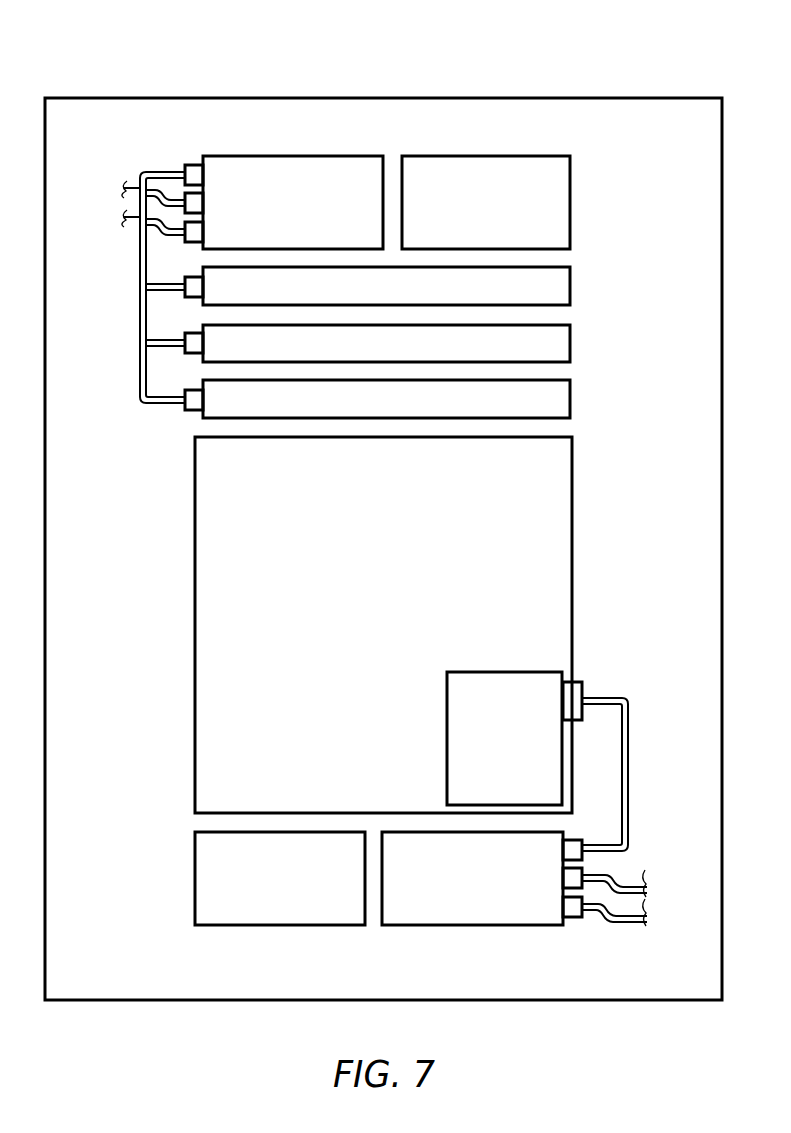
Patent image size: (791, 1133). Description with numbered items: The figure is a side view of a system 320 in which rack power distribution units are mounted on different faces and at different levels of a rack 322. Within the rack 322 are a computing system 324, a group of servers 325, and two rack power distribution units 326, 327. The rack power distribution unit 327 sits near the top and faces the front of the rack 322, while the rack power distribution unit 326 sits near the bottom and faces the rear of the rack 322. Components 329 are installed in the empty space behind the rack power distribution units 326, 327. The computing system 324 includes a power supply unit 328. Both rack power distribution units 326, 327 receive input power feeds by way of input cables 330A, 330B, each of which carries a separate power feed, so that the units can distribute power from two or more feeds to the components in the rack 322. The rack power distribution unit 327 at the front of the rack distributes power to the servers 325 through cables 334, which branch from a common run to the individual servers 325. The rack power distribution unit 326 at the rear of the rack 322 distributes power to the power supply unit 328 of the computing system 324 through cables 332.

The system 320 is at (618, 72).
The rack 322 is at (716, 125).
The computing system 324 is at (401, 635).
The servers 325 is at (404, 298).
The rack power distribution unit 326 is at (491, 888).
The rack power distribution unit 327 is at (312, 213).
The power supply units 328 is at (522, 746).
The components 329 is at (504, 213).
The input cable 330A is at (123, 220).
The input cable 330B is at (123, 186).
The cables 332 is at (604, 697).
The cables 334 is at (165, 403).